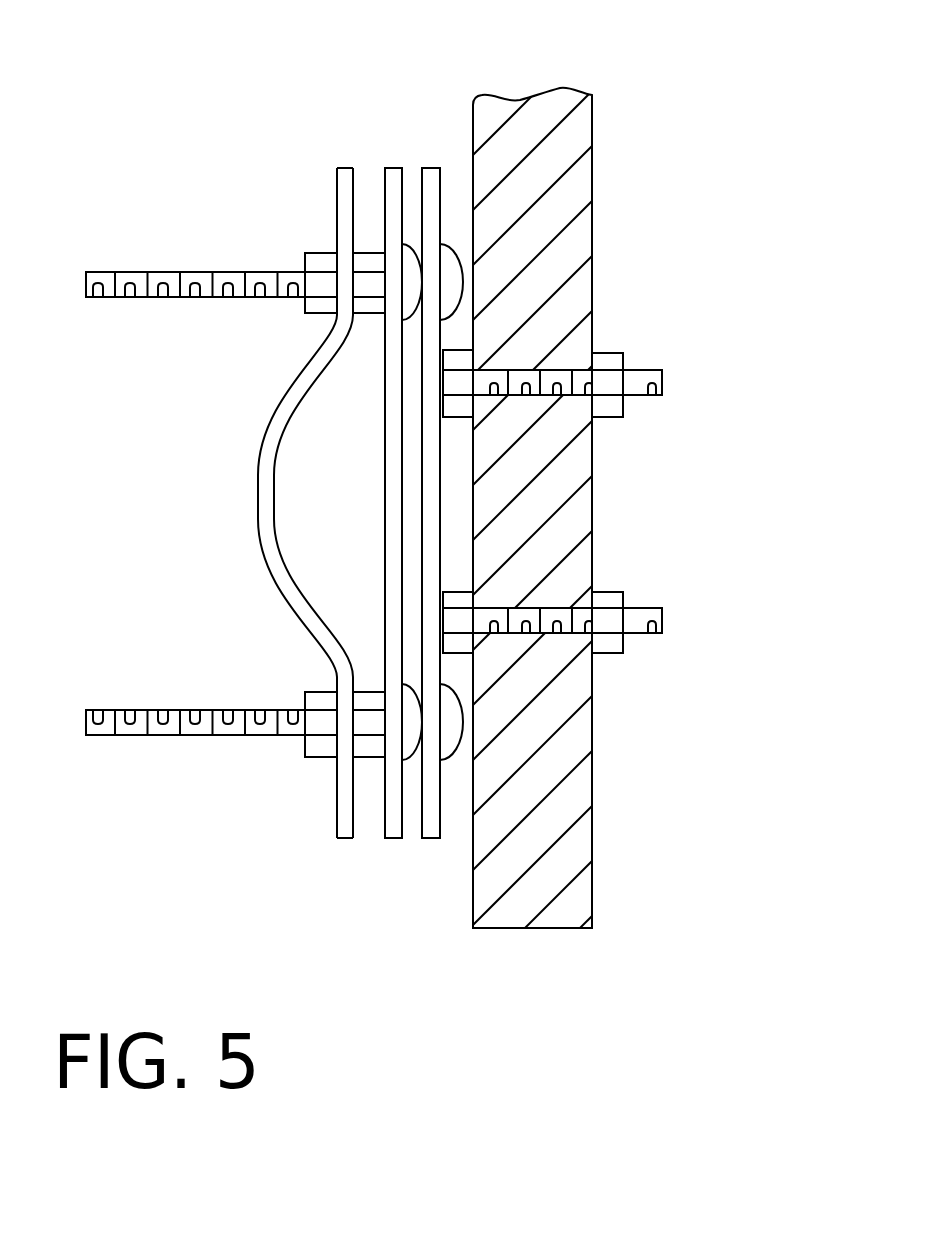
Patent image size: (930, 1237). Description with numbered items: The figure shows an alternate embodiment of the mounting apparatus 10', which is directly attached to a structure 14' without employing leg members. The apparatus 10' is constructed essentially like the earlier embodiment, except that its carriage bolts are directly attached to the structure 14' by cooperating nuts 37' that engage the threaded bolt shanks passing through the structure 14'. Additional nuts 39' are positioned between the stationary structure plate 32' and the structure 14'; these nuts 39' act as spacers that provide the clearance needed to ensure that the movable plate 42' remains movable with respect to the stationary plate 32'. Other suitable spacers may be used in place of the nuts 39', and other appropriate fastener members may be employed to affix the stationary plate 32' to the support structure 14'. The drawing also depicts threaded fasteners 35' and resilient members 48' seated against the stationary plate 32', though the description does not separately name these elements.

The apparatus 10' is at (175, 146).
The structure 14' is at (610, 535).
The stationary structure plate 32' is at (454, 423).
The threaded stud 35' is at (601, 503).
The cooperating nuts 37' is at (684, 503).
The additional nuts 39' is at (585, 499).
The movable plate 42' is at (327, 440).
The spring member 48' is at (466, 464).